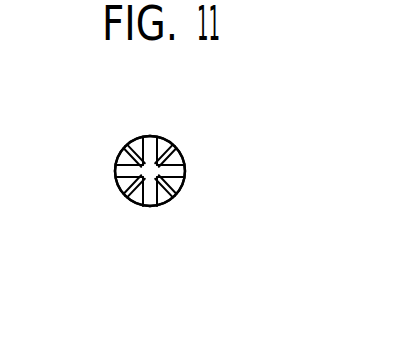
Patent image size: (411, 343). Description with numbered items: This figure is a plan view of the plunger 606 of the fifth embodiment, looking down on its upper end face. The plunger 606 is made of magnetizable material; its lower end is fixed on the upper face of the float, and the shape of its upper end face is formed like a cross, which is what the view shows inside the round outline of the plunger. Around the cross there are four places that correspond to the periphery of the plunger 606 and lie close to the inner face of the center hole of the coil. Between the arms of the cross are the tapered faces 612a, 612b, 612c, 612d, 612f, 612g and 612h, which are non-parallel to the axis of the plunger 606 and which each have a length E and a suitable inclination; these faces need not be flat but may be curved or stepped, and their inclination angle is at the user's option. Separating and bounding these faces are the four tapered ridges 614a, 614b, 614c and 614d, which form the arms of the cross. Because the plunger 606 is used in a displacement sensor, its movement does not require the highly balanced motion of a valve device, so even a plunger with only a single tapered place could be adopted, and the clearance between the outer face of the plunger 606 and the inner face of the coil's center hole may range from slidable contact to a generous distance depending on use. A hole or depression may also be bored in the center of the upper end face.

The plunger 606 is at (174, 245).
The tapered face 612a is at (176, 198).
The tapered face 612b is at (133, 208).
The tapered face 612c is at (180, 152).
The tapered face 612d is at (118, 187).
The tapered face 612f is at (168, 145).
The tapered face 612g is at (138, 137).
The tapered face 612h is at (120, 157).
The tapered ridge 614a is at (146, 207).
The tapered ridge 614b is at (185, 172).
The tapered ridge 614c is at (163, 121).
The tapered ridge 614d is at (116, 170).